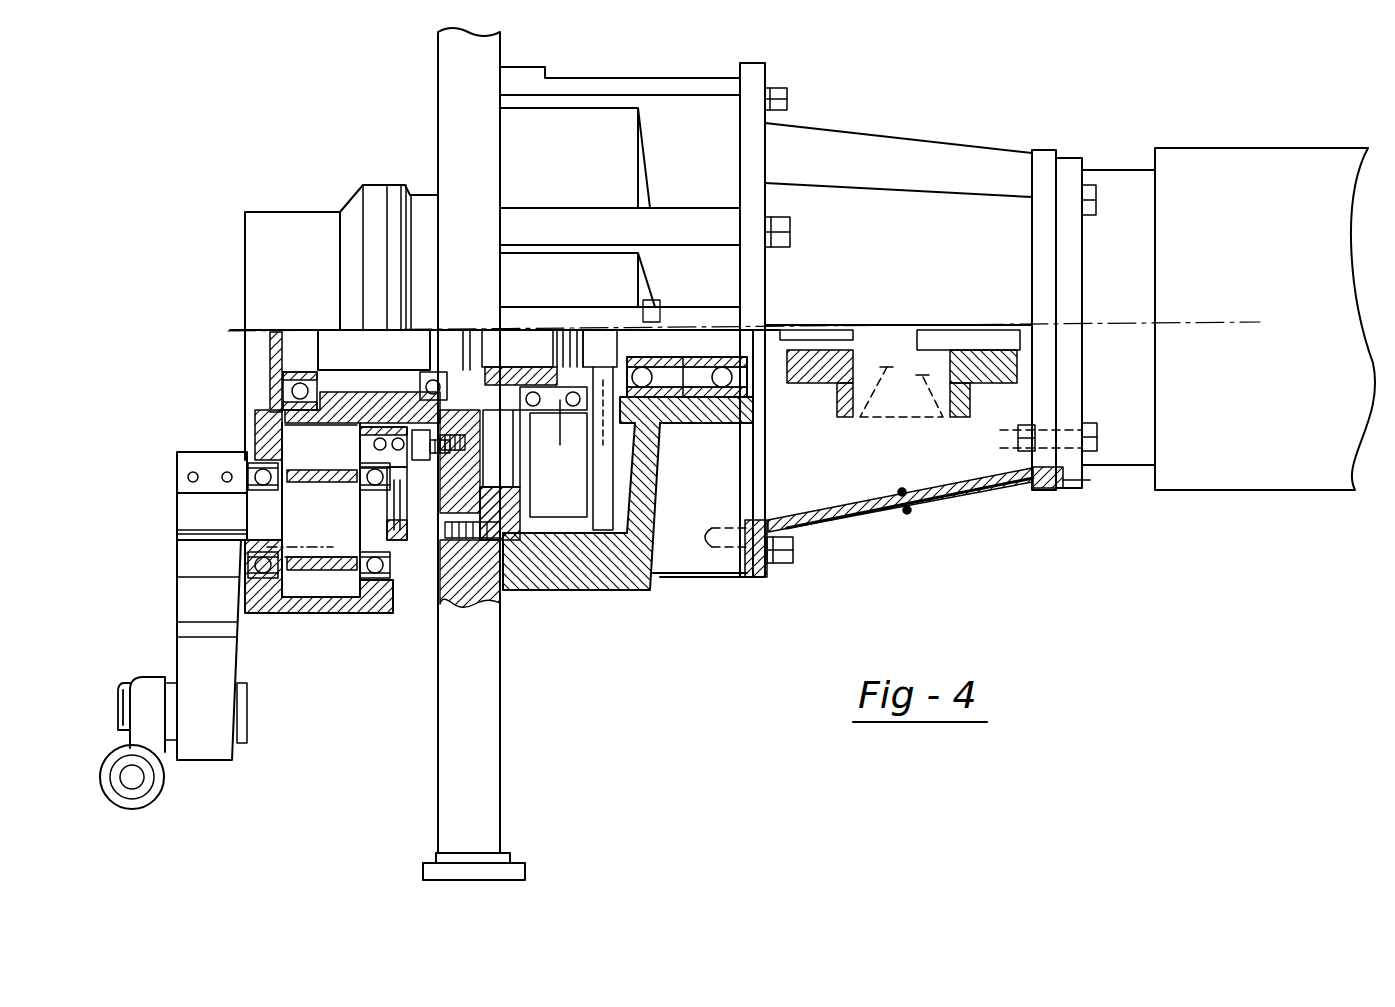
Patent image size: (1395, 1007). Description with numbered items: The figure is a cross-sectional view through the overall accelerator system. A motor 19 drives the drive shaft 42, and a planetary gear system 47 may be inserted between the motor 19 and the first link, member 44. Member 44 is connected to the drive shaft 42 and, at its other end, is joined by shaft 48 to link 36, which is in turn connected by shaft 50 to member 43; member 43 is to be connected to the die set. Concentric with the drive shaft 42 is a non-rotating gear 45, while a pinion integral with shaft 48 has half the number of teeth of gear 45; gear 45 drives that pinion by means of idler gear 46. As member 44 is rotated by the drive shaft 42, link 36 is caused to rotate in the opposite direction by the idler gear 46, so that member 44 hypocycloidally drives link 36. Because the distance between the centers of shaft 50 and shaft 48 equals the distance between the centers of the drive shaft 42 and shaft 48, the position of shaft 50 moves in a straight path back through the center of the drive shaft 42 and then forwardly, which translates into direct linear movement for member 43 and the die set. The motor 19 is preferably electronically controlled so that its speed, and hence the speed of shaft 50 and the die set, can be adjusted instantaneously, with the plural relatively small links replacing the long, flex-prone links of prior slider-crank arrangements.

The motor 19 is at (1268, 435).
The link 36 is at (188, 647).
The drive shaft 42 is at (262, 343).
The member 43 is at (162, 778).
The member 44 is at (282, 610).
The non-rotating gear 45 is at (272, 437).
The idler gear 46 is at (322, 528).
The planetary gear system 47 is at (560, 507).
The shaft 48 is at (185, 505).
The shaft 50 is at (118, 690).